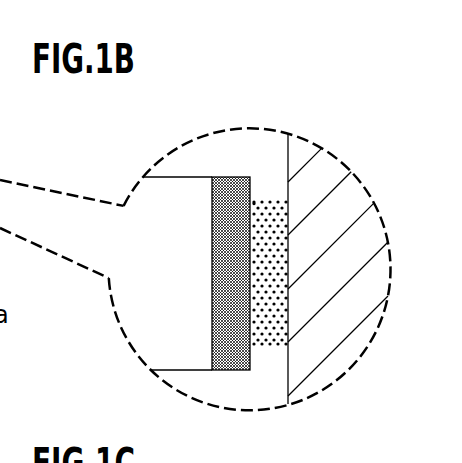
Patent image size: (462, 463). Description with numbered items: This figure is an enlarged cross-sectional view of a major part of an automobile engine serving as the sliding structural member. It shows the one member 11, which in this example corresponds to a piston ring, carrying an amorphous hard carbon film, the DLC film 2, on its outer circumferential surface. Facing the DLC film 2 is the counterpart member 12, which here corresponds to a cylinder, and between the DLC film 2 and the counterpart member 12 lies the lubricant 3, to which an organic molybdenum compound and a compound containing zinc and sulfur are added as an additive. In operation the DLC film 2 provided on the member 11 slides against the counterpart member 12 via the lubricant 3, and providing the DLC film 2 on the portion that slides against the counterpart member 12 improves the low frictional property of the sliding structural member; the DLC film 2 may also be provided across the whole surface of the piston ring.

The DLC film 2 is at (250, 352).
The lubricant 3 is at (289, 258).
The member 11 is at (192, 193).
The counterpart member 12 is at (287, 152).